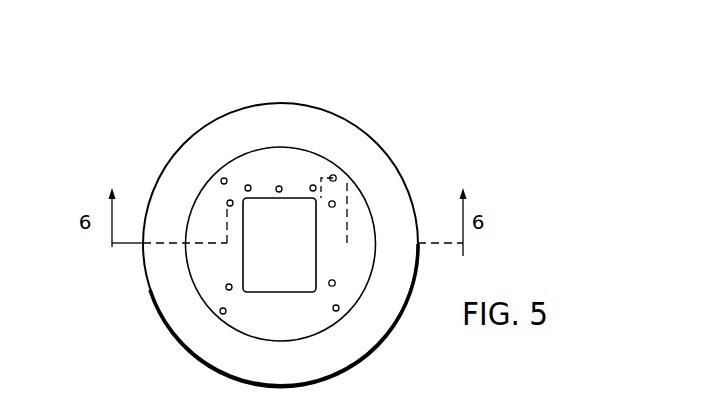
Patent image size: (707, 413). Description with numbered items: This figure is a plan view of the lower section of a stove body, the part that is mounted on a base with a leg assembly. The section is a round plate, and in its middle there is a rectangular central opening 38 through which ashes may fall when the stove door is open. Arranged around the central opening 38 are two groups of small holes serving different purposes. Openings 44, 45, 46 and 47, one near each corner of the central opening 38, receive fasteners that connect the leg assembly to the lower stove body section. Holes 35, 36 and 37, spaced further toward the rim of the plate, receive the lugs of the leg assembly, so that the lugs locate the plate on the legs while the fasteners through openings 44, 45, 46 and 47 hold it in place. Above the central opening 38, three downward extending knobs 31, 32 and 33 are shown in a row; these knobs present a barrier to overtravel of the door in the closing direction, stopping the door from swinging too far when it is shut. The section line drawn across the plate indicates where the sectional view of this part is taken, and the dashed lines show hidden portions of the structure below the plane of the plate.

The downward extending knob 31 is at (249, 184).
The downward extending knob 32 is at (279, 185).
The downward extending knob 33 is at (313, 185).
The hole 35 is at (336, 176).
The hole 36 is at (339, 307).
The hole 37 is at (224, 314).
The central opening 38 is at (300, 242).
The opening 44 is at (335, 203).
The opening 45 is at (227, 203).
The opening 46 is at (231, 289).
The opening 47 is at (335, 283).